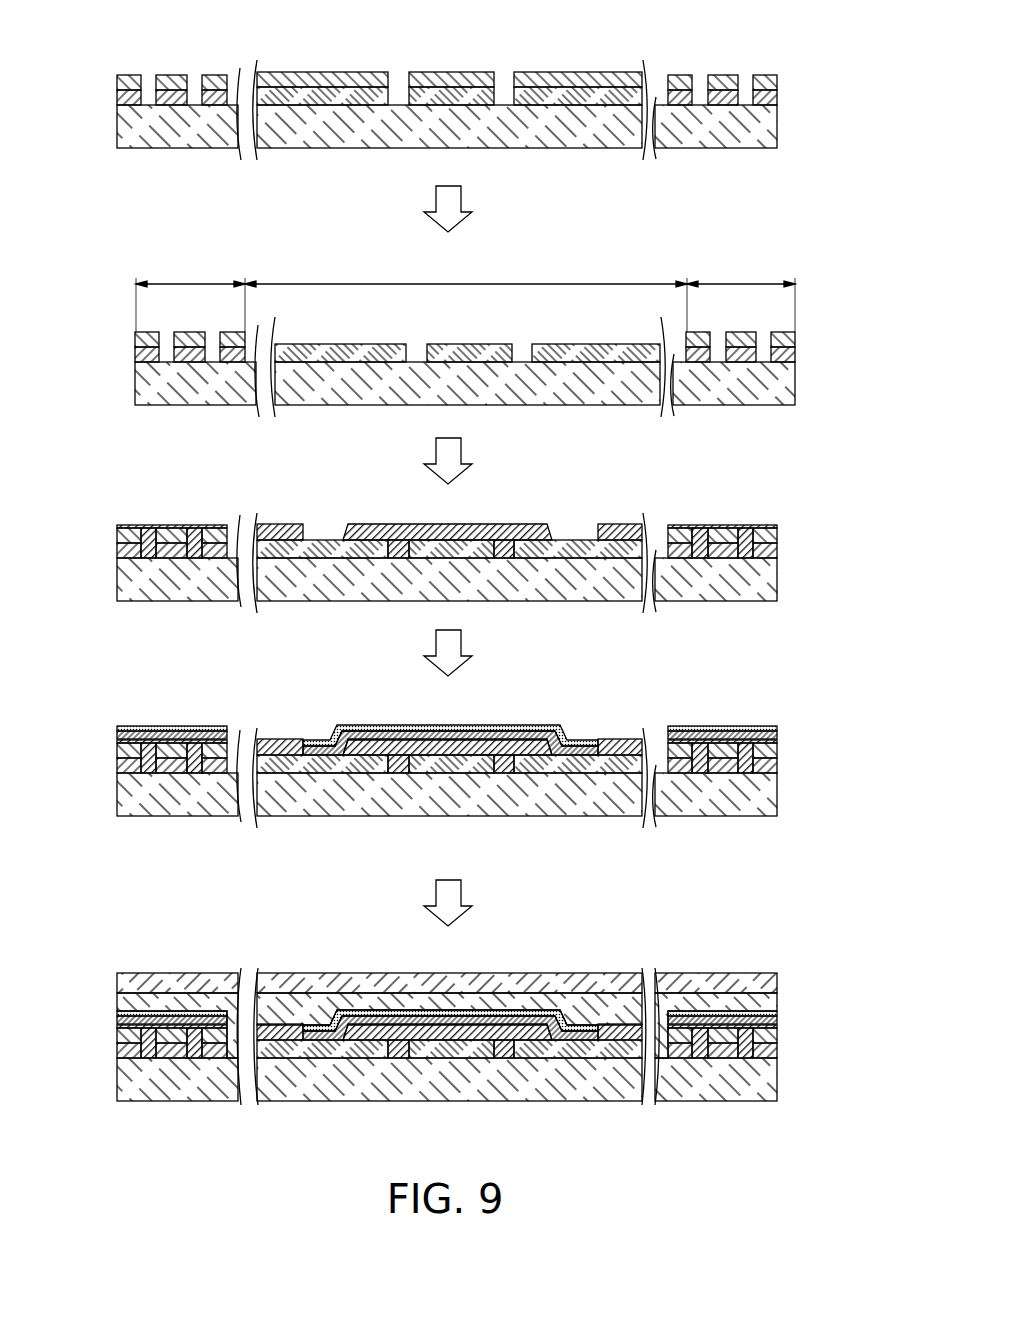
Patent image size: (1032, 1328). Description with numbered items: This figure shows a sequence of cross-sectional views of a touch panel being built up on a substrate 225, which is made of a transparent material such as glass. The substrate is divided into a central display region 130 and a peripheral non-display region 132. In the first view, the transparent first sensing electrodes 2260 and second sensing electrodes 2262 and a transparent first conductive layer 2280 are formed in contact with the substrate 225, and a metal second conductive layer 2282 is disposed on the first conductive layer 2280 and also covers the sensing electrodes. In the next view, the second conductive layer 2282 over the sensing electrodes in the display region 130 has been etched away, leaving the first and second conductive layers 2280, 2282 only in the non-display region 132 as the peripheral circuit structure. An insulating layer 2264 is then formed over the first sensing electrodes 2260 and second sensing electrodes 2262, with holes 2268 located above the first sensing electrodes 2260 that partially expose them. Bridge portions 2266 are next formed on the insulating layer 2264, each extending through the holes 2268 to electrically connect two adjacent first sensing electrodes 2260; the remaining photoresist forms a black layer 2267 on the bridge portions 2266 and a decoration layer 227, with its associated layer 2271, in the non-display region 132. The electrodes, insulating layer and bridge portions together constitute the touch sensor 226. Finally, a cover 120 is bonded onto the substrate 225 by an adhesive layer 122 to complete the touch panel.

The substrate 225 is at (130, 120).
The first sensing electrodes 2260 is at (328, 100).
The second sensing electrodes 2262 is at (458, 100).
The first conductive layer 2280 is at (722, 80).
The second conductive layer 2282 is at (768, 98).
The non-display region 132 is at (465, 292).
The display region 130 is at (466, 270).
The insulating layer 2264 is at (195, 543).
The holes 2268 is at (326, 524).
The black layer 2267 is at (386, 728).
The bridge portions 2266 is at (487, 724).
The touch sensor 226 is at (319, 722).
The sensing electrode layer 2271 is at (228, 740).
The decoration layer 227 is at (160, 728).
The adhesive layer 122 is at (770, 1005).
The cover 120 is at (718, 973).